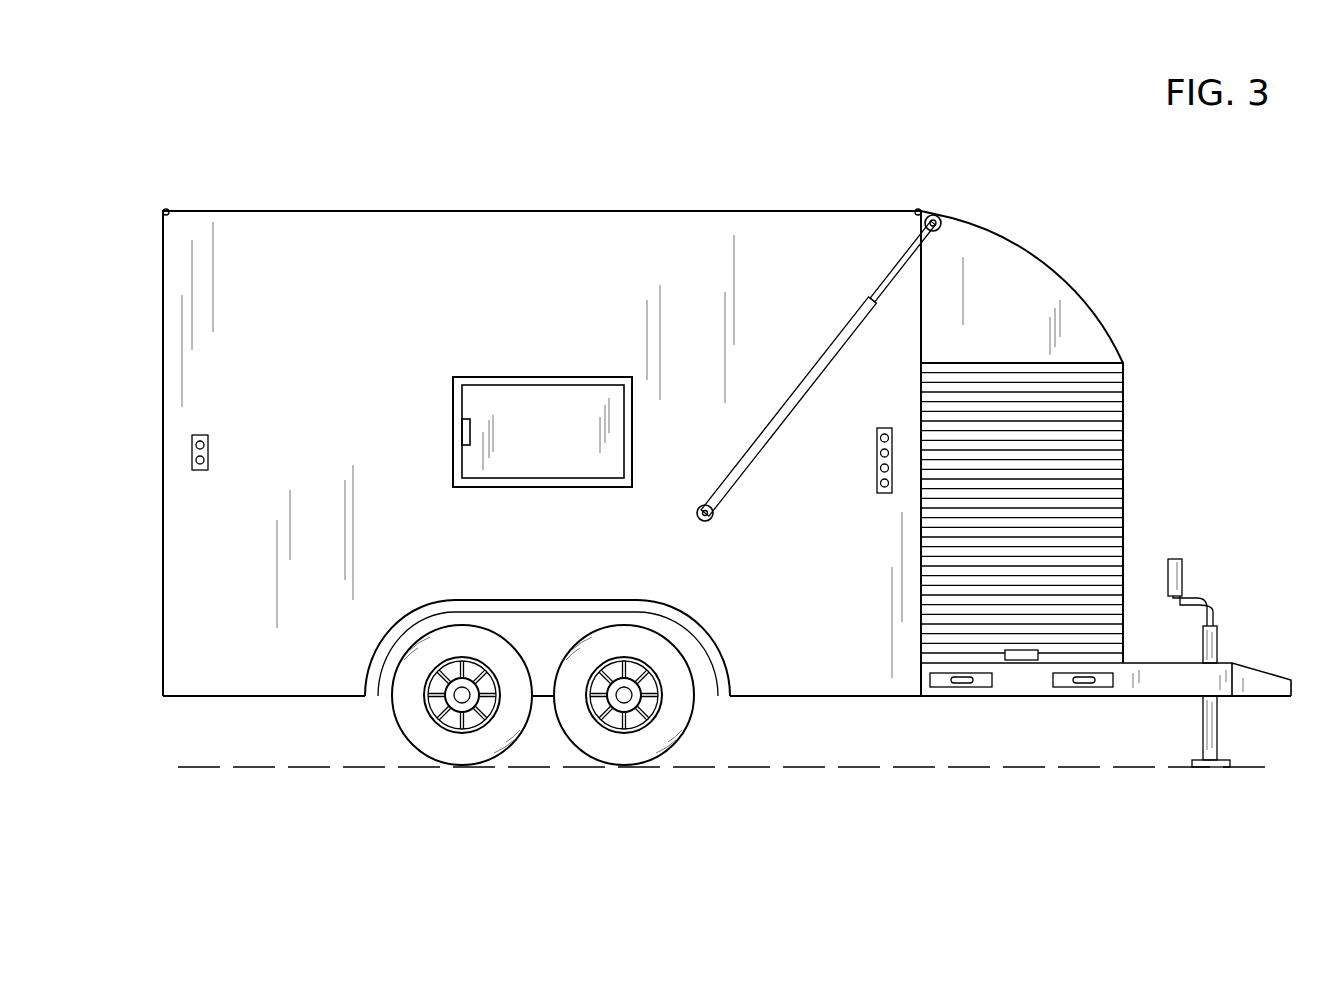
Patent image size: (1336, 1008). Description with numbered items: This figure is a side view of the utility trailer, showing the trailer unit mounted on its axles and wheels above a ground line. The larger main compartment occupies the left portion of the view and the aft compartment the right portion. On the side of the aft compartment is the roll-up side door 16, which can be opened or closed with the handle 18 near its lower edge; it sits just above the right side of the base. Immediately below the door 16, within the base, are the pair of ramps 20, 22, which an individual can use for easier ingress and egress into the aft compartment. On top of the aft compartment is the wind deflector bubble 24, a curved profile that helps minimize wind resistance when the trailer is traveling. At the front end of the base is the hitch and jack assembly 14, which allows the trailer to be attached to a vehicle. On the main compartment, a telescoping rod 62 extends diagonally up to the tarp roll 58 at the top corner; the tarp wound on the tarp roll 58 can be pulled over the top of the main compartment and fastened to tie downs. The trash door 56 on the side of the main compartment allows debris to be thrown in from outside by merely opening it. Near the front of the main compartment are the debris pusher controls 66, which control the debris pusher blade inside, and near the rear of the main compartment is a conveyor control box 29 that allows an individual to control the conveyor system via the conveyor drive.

The hitch and jack assembly 14 is at (1256, 677).
The roll-up side door 16 is at (1085, 440).
The handle 18 is at (1020, 655).
The ramp 20 is at (964, 688).
The ramp 22 is at (1082, 688).
The wind deflector bubble 24 is at (1050, 268).
The conveyor control box 29 is at (192, 440).
The trash door 56 is at (543, 377).
The tarp roll 58 is at (935, 215).
The telescoping rod 62 is at (845, 328).
The debris pusher controls 66 is at (885, 495).